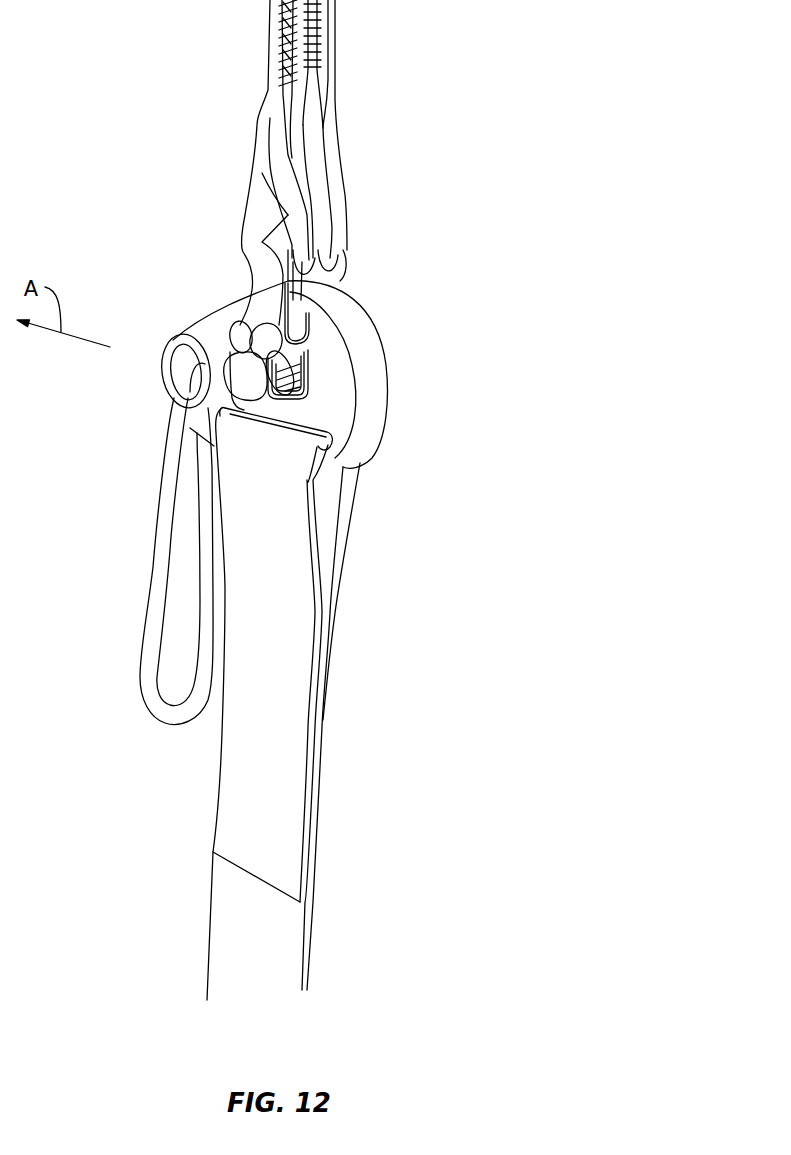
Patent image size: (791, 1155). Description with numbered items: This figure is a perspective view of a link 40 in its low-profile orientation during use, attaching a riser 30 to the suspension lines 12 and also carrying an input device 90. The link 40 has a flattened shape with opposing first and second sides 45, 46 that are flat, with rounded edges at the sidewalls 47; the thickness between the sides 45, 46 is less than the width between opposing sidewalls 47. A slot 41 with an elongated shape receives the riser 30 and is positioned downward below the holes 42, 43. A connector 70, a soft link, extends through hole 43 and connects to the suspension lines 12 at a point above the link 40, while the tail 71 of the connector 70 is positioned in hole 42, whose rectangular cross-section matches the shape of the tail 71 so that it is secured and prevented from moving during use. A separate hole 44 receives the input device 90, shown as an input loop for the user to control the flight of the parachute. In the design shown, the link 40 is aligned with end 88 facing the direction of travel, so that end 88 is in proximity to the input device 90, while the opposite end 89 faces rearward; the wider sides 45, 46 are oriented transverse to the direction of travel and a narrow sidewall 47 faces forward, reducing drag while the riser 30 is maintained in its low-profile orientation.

The suspension lines 12 is at (292, 33).
The riser 30 is at (287, 942).
The link 40 is at (257, 370).
The slot 41 is at (350, 405).
The hole 42 is at (274, 352).
The hole 43 is at (307, 330).
The hole 44 is at (170, 364).
The first side 45 is at (337, 413).
The second side 46 is at (385, 413).
The sidewall 47 is at (233, 305).
The connector 70 is at (330, 273).
The tail 71 is at (242, 372).
The end 88 is at (130, 374).
The end 89 is at (367, 390).
The input device 90 is at (160, 587).